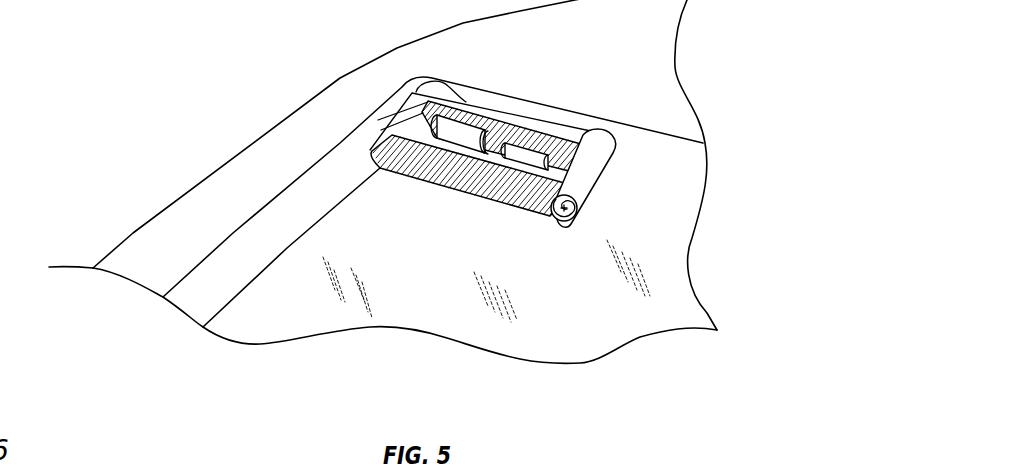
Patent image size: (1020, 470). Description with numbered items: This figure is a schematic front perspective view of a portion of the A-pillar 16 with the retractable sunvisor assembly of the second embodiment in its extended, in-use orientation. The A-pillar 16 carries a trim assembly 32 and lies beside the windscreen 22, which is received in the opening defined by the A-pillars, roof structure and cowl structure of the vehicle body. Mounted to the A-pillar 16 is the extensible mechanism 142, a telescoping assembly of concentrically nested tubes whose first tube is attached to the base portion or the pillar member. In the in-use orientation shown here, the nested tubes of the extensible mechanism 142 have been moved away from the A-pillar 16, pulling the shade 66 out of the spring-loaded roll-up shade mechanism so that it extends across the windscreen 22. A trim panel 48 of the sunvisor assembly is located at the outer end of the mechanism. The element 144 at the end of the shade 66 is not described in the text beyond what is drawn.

The A-pillar 16 is at (247, 163).
The windscreen 22 is at (583, 313).
The trim assembly 32 is at (250, 262).
The trim panel 48 is at (605, 186).
The shade 66 is at (477, 177).
The extensible mechanism 142 is at (482, 111).
The roller end 144 is at (565, 222).